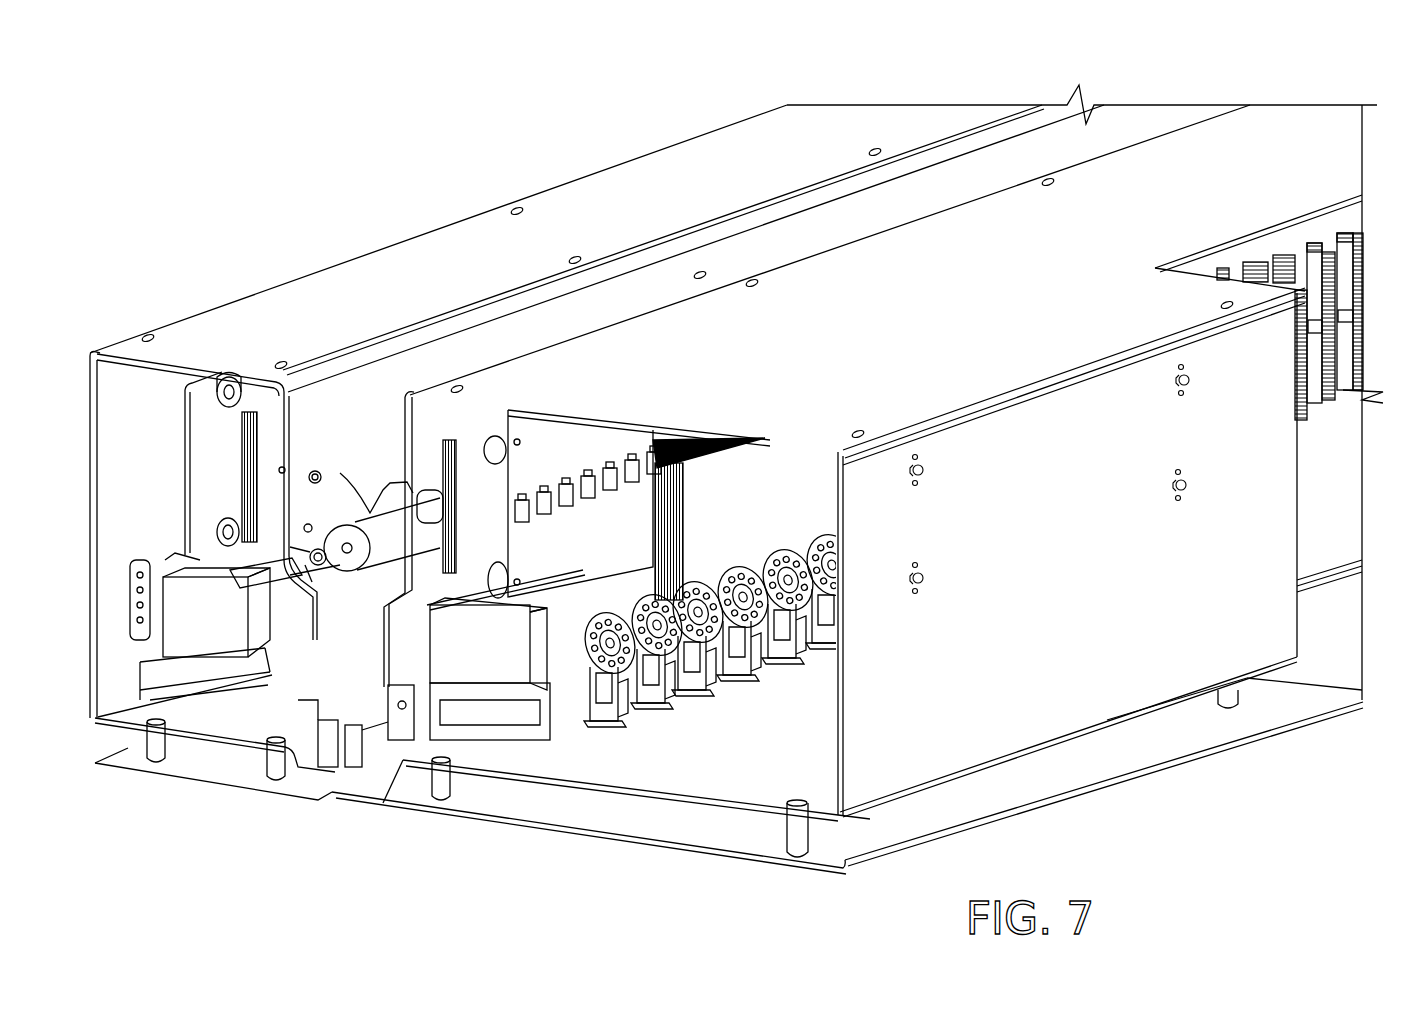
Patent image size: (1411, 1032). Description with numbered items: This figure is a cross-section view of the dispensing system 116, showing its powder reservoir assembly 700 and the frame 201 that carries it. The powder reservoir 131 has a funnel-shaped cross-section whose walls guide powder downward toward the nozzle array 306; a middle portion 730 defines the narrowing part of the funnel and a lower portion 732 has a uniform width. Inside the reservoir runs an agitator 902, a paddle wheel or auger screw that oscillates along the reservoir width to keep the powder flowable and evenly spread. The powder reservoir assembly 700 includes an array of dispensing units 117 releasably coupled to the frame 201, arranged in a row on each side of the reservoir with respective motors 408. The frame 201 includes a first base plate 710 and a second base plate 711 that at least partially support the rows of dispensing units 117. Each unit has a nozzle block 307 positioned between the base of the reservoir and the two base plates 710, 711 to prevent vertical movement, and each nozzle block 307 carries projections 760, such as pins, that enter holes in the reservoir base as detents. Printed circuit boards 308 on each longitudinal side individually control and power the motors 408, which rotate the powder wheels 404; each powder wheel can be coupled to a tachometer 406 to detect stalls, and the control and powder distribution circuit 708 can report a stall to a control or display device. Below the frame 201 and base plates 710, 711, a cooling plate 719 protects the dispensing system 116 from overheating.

The dispensing system 116 is at (1145, 93).
The powder reservoir 131 is at (878, 150).
The control and powder distribution circuit 708 is at (1113, 193).
The frame 201 is at (303, 310).
The printed circuit board 308 is at (535, 440).
The powder reservoir assembly 700 is at (775, 467).
The dispensing unit 117 is at (175, 553).
The middle portion 730 is at (293, 537).
The agitator 902 is at (365, 520).
The lower portion 732 is at (274, 568).
The projection 760 is at (270, 617).
The motor 408 is at (510, 655).
The tachometer 406 is at (795, 620).
The second base plate 711 is at (173, 707).
The nozzle array 306 is at (320, 687).
The powder wheel 404 is at (305, 745).
The nozzle block 307 is at (380, 747).
The cooling plate 719 is at (540, 812).
The first base plate 710 is at (783, 780).